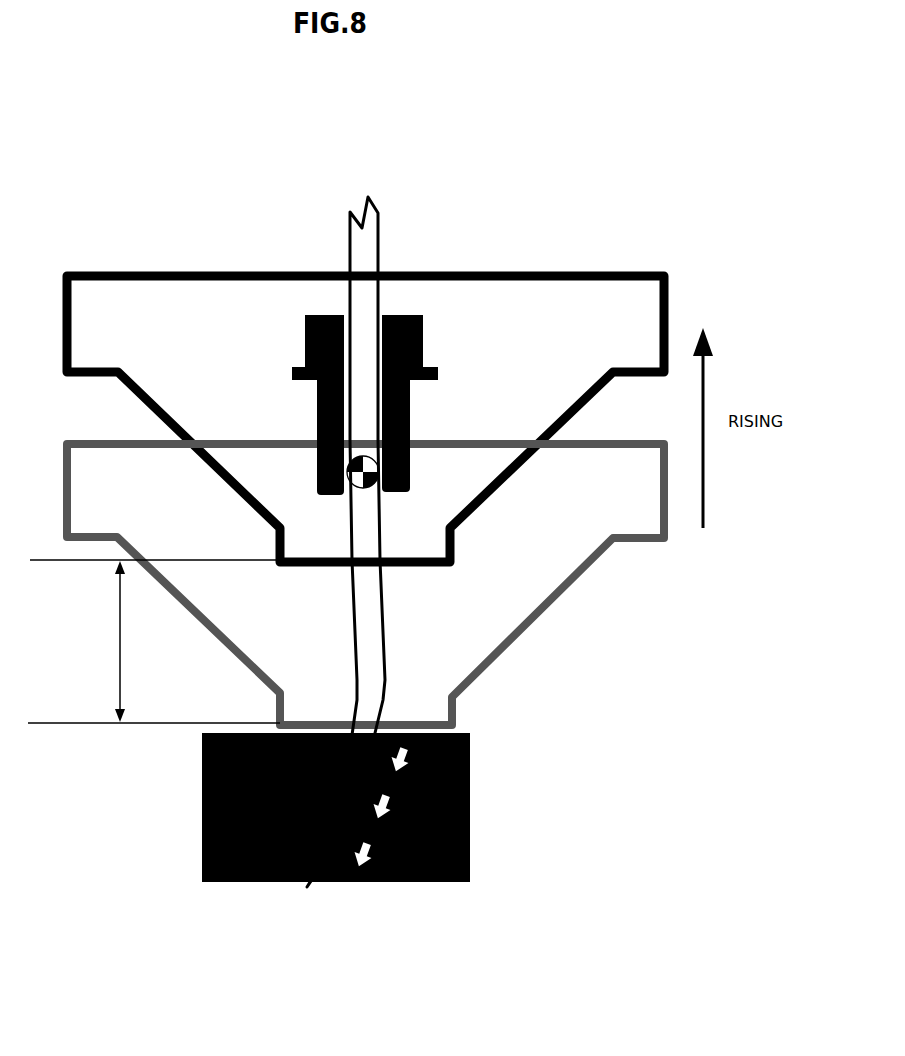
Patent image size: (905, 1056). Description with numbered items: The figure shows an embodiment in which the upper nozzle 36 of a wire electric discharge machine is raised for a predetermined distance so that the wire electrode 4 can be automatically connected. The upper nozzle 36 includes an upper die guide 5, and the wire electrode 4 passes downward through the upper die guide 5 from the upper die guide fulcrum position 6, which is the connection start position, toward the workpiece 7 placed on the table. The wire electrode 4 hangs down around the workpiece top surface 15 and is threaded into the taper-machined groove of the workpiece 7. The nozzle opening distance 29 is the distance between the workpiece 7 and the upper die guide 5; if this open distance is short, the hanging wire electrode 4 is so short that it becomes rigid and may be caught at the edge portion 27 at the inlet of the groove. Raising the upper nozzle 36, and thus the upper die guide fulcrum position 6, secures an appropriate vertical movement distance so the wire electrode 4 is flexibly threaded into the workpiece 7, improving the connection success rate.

The wire electrode 4 is at (353, 222).
The upper die guide 5 is at (317, 410).
The upper nozzle 36 is at (592, 272).
The workpiece top surface 15 is at (460, 733).
The upper die guide fulcrum position 6 is at (383, 490).
The nozzle opening distance 29 is at (154, 641).
The edge portion 27 is at (343, 742).
The workpiece 7 is at (472, 812).